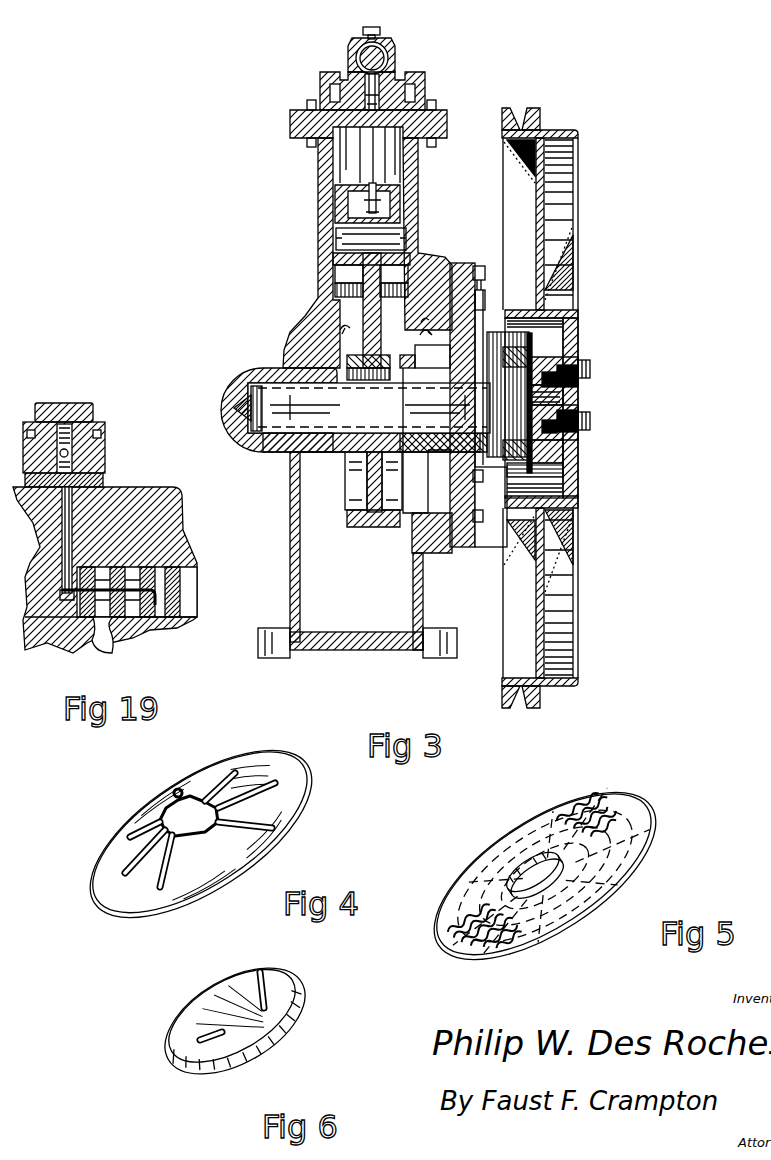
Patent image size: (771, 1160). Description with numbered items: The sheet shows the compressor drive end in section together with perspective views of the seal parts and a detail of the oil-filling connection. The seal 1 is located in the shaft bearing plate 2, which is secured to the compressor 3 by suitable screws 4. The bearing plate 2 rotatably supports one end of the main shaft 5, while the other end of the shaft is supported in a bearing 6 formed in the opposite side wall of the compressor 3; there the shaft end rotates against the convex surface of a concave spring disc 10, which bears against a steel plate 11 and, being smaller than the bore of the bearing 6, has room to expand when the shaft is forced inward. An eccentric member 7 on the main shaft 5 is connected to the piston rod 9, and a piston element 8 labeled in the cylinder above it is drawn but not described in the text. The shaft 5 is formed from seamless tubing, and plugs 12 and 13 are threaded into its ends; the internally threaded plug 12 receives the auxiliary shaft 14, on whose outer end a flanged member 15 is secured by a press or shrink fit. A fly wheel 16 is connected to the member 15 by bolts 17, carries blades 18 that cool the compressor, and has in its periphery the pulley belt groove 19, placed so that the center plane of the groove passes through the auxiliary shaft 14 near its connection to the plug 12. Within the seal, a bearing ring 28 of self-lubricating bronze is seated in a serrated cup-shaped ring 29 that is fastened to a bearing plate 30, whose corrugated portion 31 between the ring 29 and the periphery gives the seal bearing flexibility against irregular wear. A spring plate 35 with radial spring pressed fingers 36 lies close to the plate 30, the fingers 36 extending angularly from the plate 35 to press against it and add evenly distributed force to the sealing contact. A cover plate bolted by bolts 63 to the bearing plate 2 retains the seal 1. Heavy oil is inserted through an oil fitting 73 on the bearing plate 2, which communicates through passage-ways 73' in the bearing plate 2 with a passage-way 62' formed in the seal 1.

In FIG. 3, the seal 1 is at (572, 352).
In FIG. 3, the shaft bearing plate 2 is at (462, 540).
In FIG. 19, the shaft bearing plate 2 is at (167, 532).
In FIG. 3, the compressor 3 is at (417, 263).
In FIG. 3, the screws 4 is at (478, 272).
In FIG. 3, the main shaft 5 is at (422, 423).
In FIG. 3, the bearing 6 is at (327, 443).
In FIG. 3, the eccentric member 7 is at (367, 527).
In FIG. 3, the piston 8 is at (405, 209).
In FIG. 3, the piston rod 9 is at (372, 333).
In FIG. 3, the concave spring disc 10 is at (255, 447).
In FIG. 6, the concave spring disc 10 is at (272, 1013).
In FIG. 3, the steel plate 11 is at (245, 445).
In FIG. 3, the threaded plug 12 is at (490, 418).
In FIG. 3, the plug 13 is at (270, 462).
In FIG. 3, the auxiliary shaft 14 is at (580, 395).
In FIG. 3, the flanged member 15 is at (590, 433).
In FIG. 3, the fly wheel 16 is at (570, 500).
In FIG. 3, the bolts 17 is at (590, 372).
In FIG. 3, the blades 18 is at (557, 587).
In FIG. 3, the pulley belt groove 19 is at (517, 125).
In FIG. 3, the bolts 63 is at (580, 318).
In FIG. 5, the bearing ring 28 is at (537, 835).
In FIG. 5, the cup-shaped ring 29 is at (573, 817).
In FIG. 5, the bearing plate 30 is at (643, 837).
In FIG. 5, the flexible portion 31 is at (613, 813).
In FIG. 4, the spring plate 35 is at (287, 772).
In FIG. 4, the radial spring pressed fingers 36 is at (267, 835).
In FIG. 19, the oil fitting 73 is at (90, 445).
In FIG. 19, the passage-ways 73' is at (109, 533).
In FIG. 19, the passage-way 62' is at (153, 591).